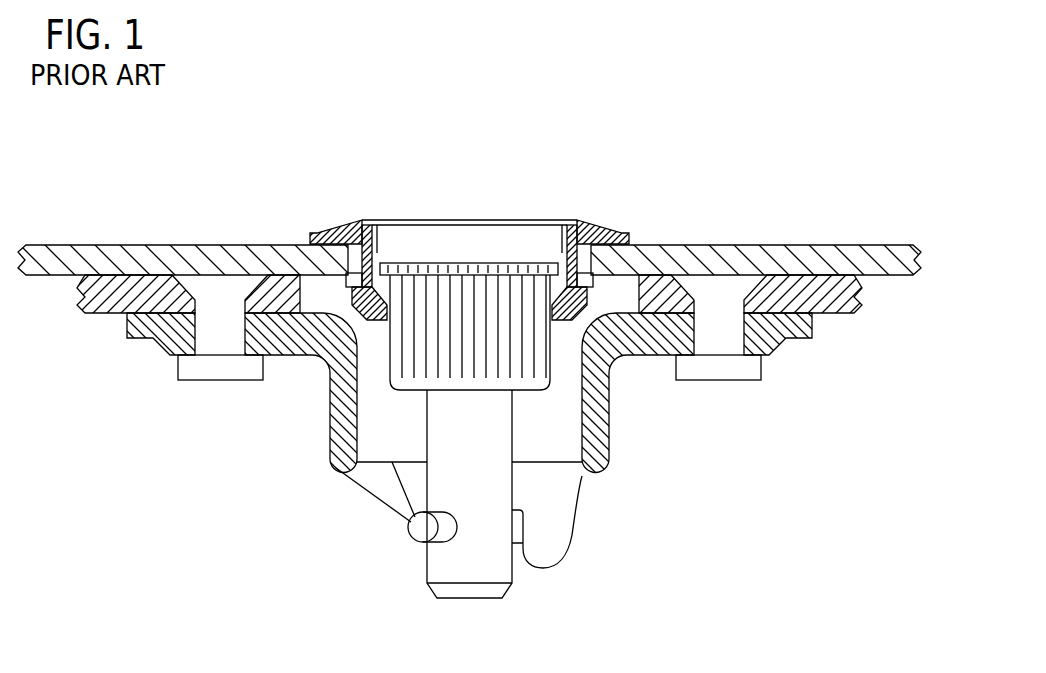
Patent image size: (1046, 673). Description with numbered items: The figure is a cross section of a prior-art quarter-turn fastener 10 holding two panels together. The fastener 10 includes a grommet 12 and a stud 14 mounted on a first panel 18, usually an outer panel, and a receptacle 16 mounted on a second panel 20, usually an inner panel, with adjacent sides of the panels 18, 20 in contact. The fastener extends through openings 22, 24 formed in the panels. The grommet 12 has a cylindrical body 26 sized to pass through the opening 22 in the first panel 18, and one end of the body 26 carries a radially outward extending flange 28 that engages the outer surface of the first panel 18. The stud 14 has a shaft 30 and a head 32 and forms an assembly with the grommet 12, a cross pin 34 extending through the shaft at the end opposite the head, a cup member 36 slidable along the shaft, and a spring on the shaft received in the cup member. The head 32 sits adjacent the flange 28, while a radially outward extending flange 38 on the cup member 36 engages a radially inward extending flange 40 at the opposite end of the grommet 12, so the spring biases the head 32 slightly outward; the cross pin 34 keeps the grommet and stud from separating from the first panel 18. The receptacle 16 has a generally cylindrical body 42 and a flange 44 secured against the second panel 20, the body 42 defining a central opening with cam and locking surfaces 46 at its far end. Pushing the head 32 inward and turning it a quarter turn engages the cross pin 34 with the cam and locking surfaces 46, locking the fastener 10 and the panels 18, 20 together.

The fastener 10 is at (197, 182).
The grommet 12 is at (613, 204).
The stud 14 is at (482, 625).
The receptacle 16 is at (308, 458).
The first panel 18 is at (122, 244).
The second panel 20 is at (103, 317).
The opening 22 is at (378, 252).
The opening 24 is at (297, 289).
The cylindrical body 26 is at (560, 250).
The radially outward extending flange 28 is at (333, 225).
The shaft 30 is at (437, 563).
The head 32 is at (437, 220).
The cross pin 34 is at (421, 528).
The cup member 36 is at (418, 387).
The radially outward extending flange 38 is at (483, 262).
The radially inward extending flange 40 is at (563, 387).
The cylindrical body 42 is at (607, 433).
The flange 44 is at (777, 347).
The cam and locking surfaces 46 is at (380, 505).